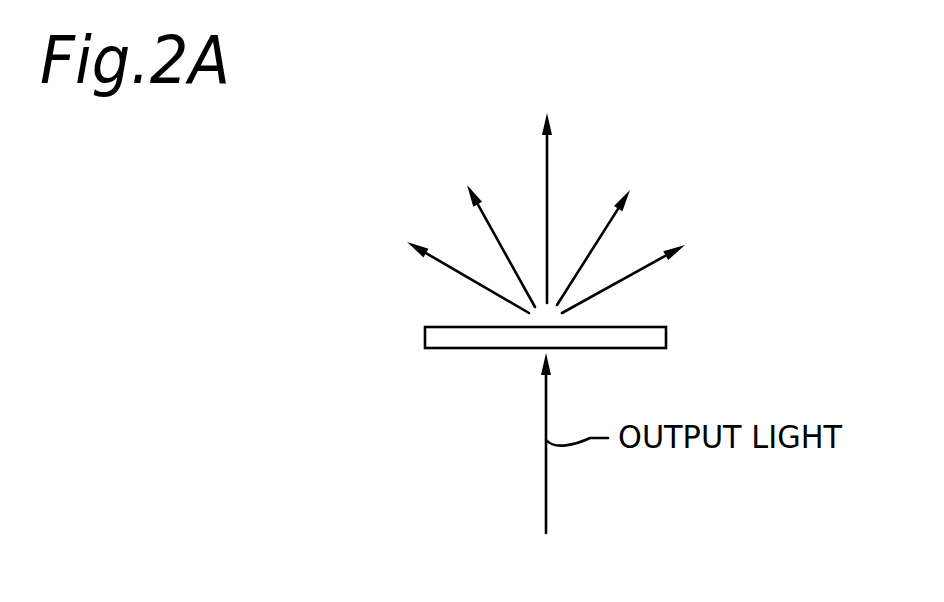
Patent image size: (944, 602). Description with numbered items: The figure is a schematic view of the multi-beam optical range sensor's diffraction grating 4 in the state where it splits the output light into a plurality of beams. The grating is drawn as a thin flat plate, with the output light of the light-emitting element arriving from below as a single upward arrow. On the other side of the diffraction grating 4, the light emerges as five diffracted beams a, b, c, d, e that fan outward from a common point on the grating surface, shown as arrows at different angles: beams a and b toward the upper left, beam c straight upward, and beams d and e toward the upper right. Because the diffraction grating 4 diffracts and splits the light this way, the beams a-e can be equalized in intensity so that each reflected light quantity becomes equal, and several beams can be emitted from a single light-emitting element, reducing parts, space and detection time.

The diffraction grating 4 is at (668, 338).
The beam a is at (462, 278).
The beam b is at (487, 222).
The beam c is at (547, 178).
The beam d is at (612, 219).
The beam e is at (642, 270).